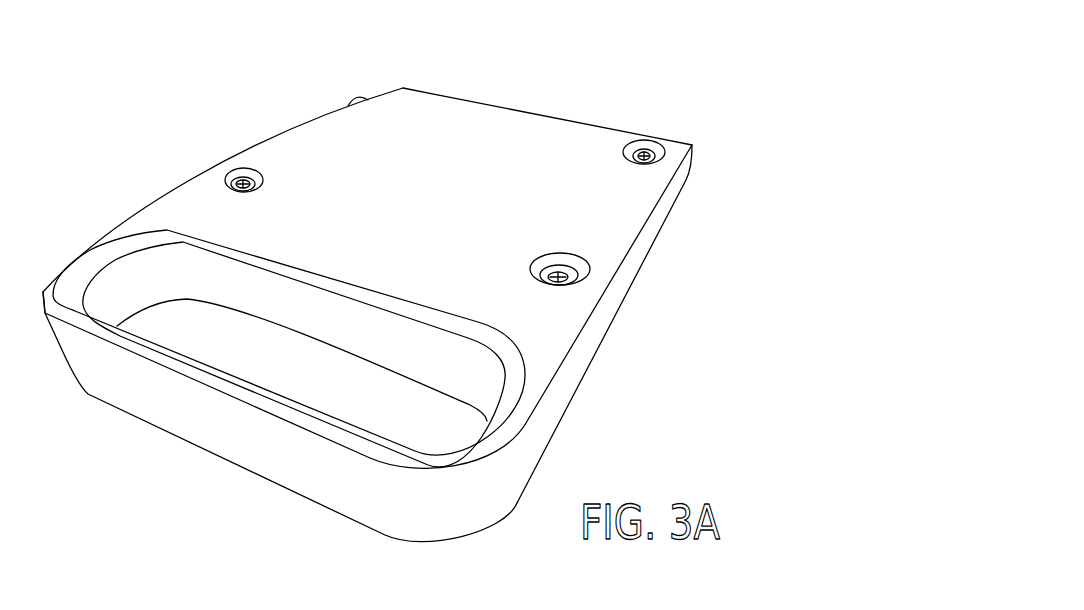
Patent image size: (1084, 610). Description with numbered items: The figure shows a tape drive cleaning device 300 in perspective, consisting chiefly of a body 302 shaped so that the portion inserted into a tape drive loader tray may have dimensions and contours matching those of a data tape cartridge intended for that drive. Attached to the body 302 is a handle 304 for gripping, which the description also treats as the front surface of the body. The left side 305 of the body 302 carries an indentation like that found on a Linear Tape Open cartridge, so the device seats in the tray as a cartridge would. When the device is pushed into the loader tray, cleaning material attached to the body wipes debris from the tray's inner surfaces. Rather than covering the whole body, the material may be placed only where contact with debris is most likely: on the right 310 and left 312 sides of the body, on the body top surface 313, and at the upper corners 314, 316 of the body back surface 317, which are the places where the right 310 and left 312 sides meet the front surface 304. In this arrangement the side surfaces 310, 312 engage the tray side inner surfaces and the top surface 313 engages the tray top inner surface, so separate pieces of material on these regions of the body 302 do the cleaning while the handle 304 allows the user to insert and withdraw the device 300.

The tape drive cleaning device 300 is at (648, 47).
The body 302 is at (453, 147).
The handle 304 is at (238, 433).
The left side 305 is at (352, 99).
The right side 310 is at (630, 252).
The left side 312 is at (243, 144).
The body top surface 313 is at (464, 183).
The upper corner 314 is at (693, 143).
The upper corner 316 is at (403, 87).
The body back surface 317 is at (526, 111).